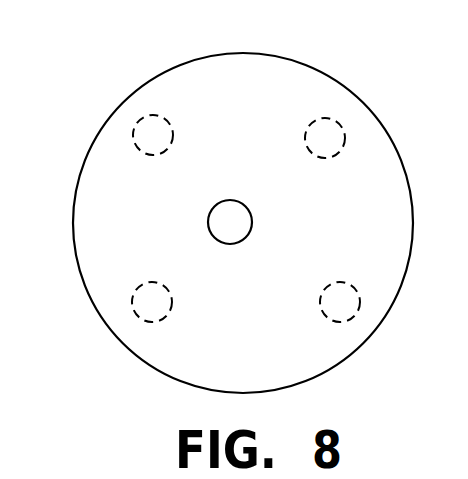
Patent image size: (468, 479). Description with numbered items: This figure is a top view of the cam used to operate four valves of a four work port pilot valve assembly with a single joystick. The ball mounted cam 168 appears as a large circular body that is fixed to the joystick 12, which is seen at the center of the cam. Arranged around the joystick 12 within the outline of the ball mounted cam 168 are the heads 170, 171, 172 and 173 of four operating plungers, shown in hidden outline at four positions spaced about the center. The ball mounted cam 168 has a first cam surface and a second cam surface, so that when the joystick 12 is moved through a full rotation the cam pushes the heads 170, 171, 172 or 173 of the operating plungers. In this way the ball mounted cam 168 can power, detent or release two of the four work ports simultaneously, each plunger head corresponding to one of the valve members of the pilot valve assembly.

The ball mounted cam 168 is at (97, 225).
The joystick 12 is at (240, 223).
The head of operating plunger 170 is at (140, 132).
The head of operating plunger 171 is at (327, 122).
The head of operating plunger 172 is at (353, 307).
The head of operating plunger 173 is at (147, 308).